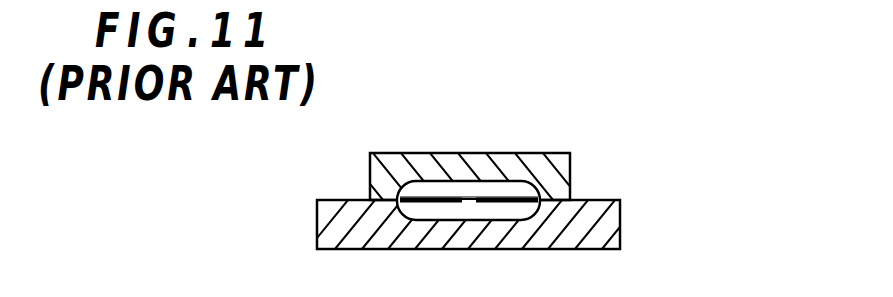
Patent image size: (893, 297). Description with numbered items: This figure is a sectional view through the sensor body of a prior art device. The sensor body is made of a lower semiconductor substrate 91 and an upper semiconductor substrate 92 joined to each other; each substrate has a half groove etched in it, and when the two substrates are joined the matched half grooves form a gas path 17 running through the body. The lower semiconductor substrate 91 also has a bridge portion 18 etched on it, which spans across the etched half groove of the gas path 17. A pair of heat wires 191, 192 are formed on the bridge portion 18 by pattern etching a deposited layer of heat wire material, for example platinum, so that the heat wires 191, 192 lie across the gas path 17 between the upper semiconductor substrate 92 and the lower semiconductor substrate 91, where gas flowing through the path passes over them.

The lower semiconductor substrate 91 is at (618, 230).
The upper semiconductor substrate 92 is at (553, 173).
The gas path 17 is at (472, 195).
The bridge portion 18 is at (472, 208).
The heat wire 191 is at (425, 197).
The heat wire 192 is at (518, 196).